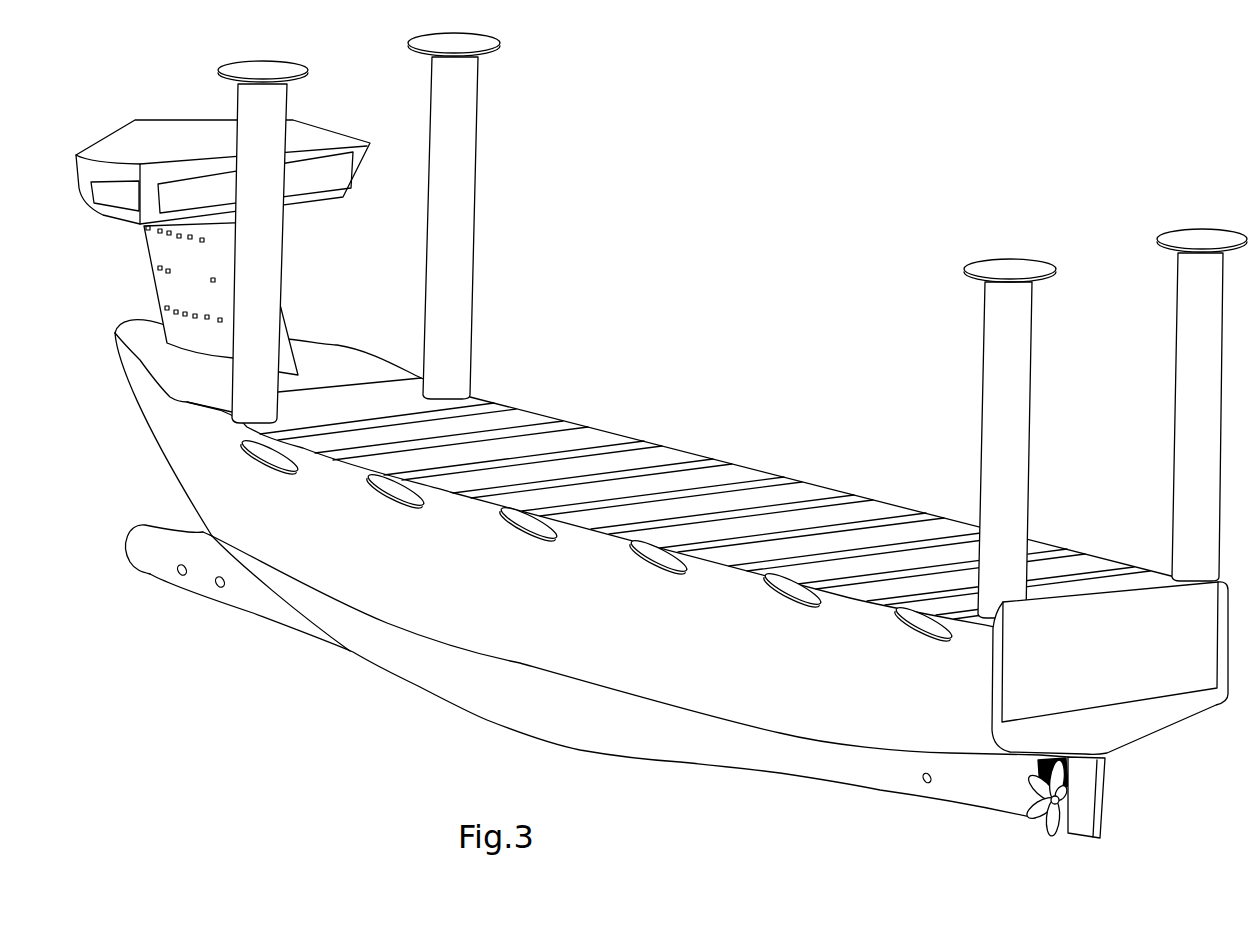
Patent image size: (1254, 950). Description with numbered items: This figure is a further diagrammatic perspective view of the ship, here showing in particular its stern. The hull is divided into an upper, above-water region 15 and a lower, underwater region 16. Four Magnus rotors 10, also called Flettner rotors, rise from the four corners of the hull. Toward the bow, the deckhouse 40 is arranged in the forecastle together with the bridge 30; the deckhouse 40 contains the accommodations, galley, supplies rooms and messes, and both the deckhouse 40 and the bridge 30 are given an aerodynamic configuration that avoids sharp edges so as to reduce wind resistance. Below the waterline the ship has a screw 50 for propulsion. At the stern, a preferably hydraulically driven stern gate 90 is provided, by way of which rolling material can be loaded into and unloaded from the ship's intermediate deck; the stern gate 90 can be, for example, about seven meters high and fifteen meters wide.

The Magnus rotor 10 is at (732, 325).
The above-water region 15 is at (645, 483).
The underwater region 16 is at (591, 575).
The bridge 30 is at (223, 172).
The deckhouse 40 is at (221, 298).
The screw 50 is at (1058, 812).
The stern gate 90 is at (1110, 668).